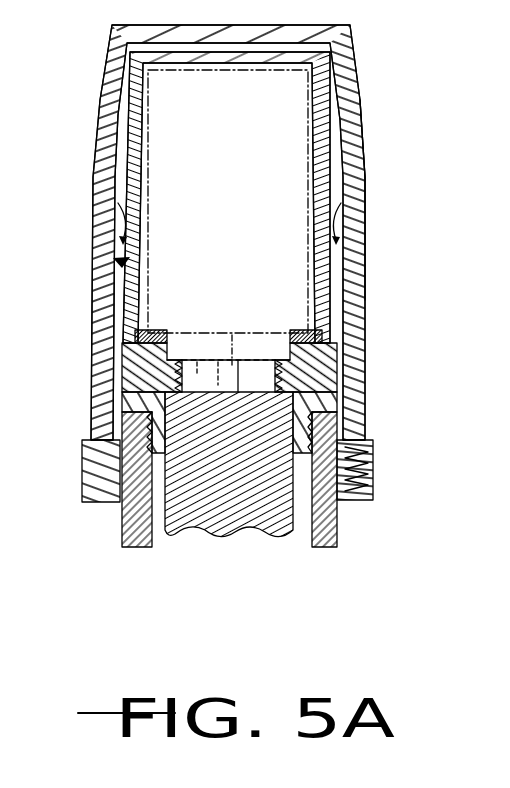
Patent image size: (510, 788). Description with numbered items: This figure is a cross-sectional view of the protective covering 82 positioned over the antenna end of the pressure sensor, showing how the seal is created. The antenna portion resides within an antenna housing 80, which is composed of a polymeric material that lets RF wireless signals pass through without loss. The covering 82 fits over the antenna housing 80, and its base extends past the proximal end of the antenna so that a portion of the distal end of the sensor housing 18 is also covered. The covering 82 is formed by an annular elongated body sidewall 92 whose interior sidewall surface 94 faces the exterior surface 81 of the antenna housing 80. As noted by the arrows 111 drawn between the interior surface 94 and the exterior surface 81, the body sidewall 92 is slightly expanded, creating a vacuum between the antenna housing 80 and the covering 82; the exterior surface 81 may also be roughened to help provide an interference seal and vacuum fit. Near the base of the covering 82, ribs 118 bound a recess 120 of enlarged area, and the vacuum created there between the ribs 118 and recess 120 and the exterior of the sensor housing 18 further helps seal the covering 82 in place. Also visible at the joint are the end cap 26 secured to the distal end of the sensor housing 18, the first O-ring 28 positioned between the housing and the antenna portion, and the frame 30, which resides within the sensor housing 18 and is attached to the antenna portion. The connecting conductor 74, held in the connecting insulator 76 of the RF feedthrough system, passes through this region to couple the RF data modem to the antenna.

The sensor housing 18 is at (337, 517).
The end cap 26 is at (327, 403).
The first O-ring 28 is at (323, 333).
The frame 30 is at (168, 387).
The connecting conductor 74 is at (230, 330).
The connecting insulator 76 is at (193, 340).
The antenna housing 80 is at (320, 117).
The exterior surface of the antenna housing 81 is at (329, 145).
The protective covering 82 is at (110, 90).
The annular elongated body sidewall 92 is at (365, 183).
The interior sidewall surface 94 is at (120, 262).
The arrows 111 is at (108, 216).
The ribs 118 is at (373, 457).
The recess 120 is at (340, 461).